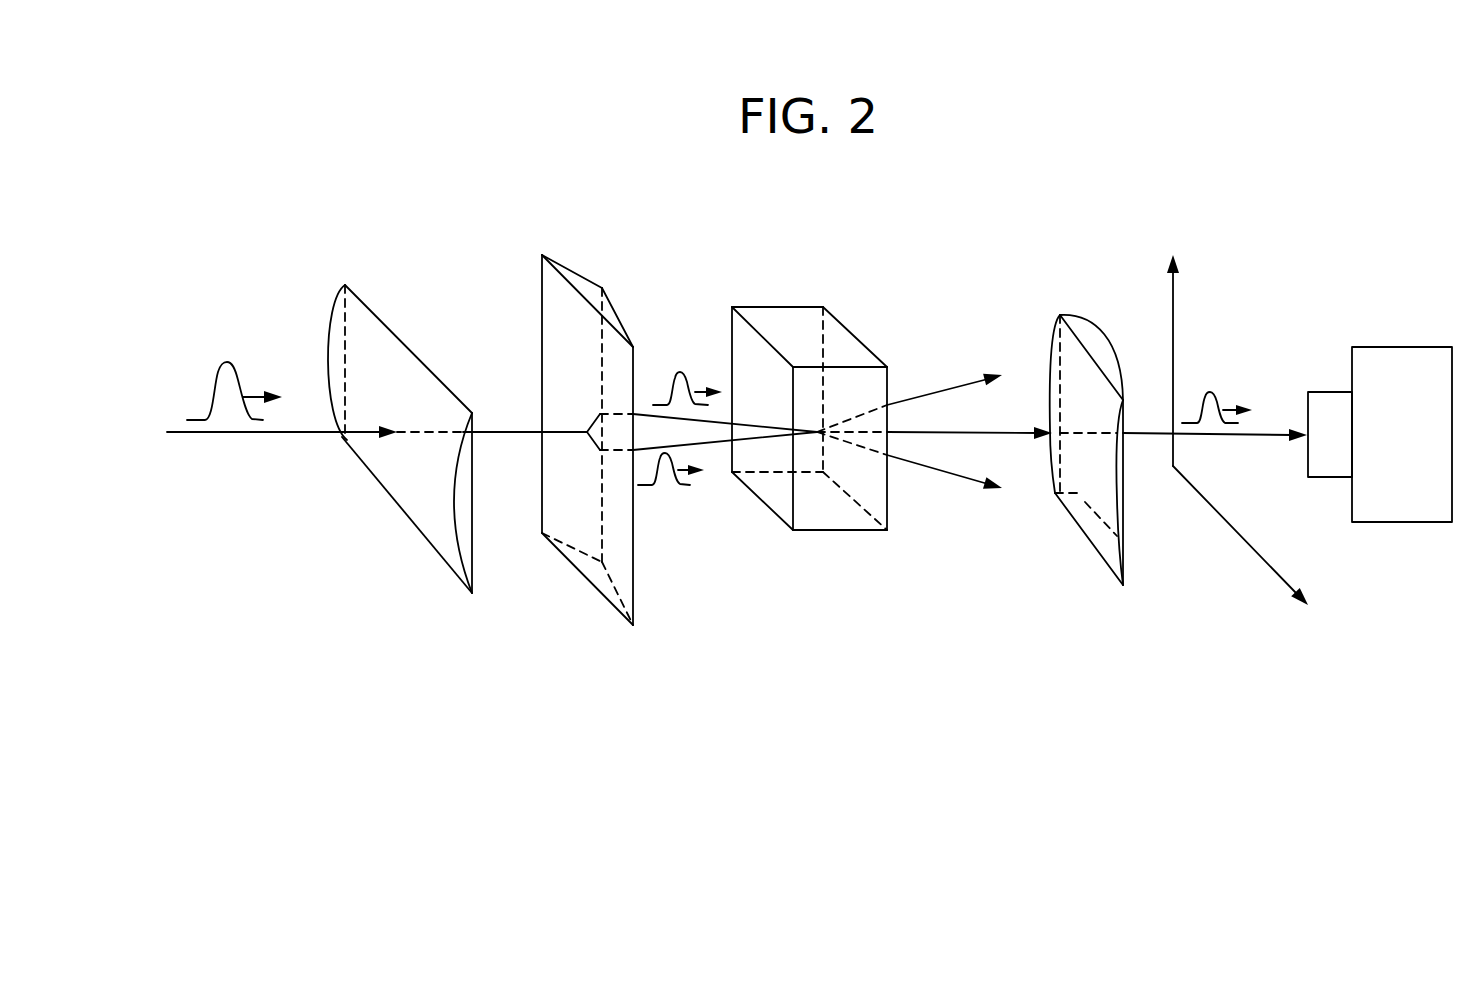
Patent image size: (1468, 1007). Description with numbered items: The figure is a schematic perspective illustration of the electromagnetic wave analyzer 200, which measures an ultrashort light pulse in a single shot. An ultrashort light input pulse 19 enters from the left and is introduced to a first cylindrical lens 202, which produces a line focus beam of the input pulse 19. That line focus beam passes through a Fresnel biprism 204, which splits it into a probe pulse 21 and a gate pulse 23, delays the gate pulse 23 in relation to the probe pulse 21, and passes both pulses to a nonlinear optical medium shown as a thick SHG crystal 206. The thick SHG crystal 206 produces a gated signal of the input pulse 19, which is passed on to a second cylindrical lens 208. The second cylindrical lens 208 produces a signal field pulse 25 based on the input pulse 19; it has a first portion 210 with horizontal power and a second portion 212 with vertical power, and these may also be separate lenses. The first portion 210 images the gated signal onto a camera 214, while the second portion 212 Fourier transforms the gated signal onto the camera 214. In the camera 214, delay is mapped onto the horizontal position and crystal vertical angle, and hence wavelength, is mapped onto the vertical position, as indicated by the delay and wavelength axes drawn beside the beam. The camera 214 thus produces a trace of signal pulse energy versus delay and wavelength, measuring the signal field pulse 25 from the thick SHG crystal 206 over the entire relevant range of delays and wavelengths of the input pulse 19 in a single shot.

The electromagnetic wave analyzer 200 is at (366, 814).
The input pulse 19 is at (215, 369).
The first cylindrical lens 202 is at (374, 335).
The Fresnel biprism 204 is at (570, 307).
The probe pulse 21 is at (681, 372).
The gate pulse 23 is at (640, 483).
The thick SHG crystal 206 is at (835, 343).
The second cylindrical lens 208 is at (1083, 473).
The first portion 210 is at (1113, 500).
The second portion 212 is at (1093, 323).
The signal field pulse 25 is at (1203, 392).
The camera 214 is at (1380, 450).